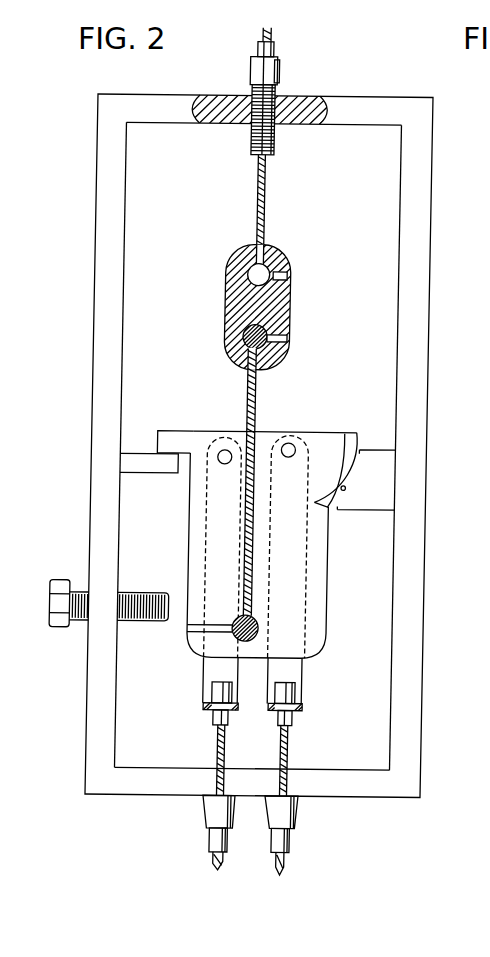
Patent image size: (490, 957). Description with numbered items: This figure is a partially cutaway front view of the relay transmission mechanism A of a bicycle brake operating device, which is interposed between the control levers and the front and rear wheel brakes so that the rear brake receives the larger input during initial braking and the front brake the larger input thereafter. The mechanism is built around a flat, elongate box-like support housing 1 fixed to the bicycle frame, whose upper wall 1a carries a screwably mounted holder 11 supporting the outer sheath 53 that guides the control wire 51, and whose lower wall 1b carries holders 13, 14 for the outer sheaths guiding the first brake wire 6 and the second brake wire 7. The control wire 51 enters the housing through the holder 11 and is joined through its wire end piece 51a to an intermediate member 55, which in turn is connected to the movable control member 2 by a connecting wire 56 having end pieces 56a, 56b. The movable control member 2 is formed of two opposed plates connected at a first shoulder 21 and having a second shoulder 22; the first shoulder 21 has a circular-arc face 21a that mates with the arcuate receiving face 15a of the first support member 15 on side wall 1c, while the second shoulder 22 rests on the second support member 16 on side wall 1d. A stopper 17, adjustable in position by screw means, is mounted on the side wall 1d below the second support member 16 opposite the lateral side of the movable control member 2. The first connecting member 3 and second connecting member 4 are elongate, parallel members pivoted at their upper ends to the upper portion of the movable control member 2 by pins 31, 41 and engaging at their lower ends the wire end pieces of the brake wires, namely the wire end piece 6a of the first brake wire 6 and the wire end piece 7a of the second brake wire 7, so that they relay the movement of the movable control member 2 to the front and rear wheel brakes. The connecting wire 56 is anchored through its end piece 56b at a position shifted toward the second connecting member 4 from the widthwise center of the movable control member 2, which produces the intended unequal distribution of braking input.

The relay transmission mechanism A is at (433, 187).
The support housing 1 is at (433, 263).
The upper wall 1a is at (360, 104).
The lower wall 1b is at (375, 789).
The side wall 1c is at (430, 360).
The side wall 1d is at (98, 352).
The movable control member 2 is at (337, 564).
The first connecting member 3 is at (310, 665).
The second connecting member 4 is at (218, 666).
The first brake wire 6 is at (302, 746).
The wire end piece 6a is at (309, 690).
The second brake wire 7 is at (229, 744).
The left bit holder 7a is at (228, 691).
The holder 11 is at (277, 71).
The holder 13 is at (311, 808).
The holder 14 is at (218, 807).
The first support member 15 is at (370, 479).
The receiving face 15a is at (350, 488).
The second support member 16 is at (154, 464).
The stopper 17 is at (150, 618).
The first shoulder 21 is at (360, 442).
The face 21a is at (365, 462).
The second shoulder 22 is at (172, 445).
The pin 31 is at (298, 444).
The pin 41 is at (228, 448).
The control wire 51 is at (270, 190).
The wire end piece 51a is at (252, 278).
The outer sheath 53 is at (270, 46).
The intermediate member 55 is at (286, 308).
The connecting wire 56 is at (256, 378).
The end piece 56a is at (285, 350).
The end piece 56b is at (236, 616).